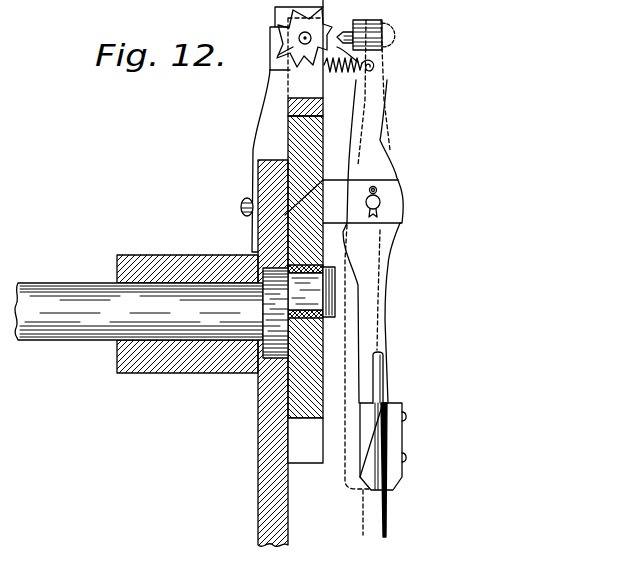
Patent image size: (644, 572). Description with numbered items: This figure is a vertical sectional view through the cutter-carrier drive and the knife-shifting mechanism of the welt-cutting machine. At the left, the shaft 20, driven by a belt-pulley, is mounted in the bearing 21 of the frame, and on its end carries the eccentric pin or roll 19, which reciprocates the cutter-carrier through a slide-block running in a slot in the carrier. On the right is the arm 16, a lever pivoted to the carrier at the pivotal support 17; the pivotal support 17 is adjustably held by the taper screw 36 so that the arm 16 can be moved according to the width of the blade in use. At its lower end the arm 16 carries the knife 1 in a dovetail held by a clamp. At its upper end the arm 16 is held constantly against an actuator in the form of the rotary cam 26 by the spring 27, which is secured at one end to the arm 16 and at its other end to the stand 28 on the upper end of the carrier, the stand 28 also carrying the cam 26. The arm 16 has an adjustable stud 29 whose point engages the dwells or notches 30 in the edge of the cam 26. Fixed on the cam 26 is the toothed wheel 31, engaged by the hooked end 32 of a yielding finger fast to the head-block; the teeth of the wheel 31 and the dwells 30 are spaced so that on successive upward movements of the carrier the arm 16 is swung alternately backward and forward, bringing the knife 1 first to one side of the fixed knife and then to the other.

The knife 1 is at (387, 523).
The arm 16 is at (385, 303).
The pivotal support 17 is at (395, 198).
The eccentric pin or roll 19 is at (267, 268).
The shaft 20 is at (183, 320).
The bearing 21 is at (123, 366).
The rotary cam 26 is at (322, 6).
The spring 27 is at (360, 79).
The stand 28 is at (318, 90).
The adjustable stud 29 is at (387, 49).
The dwells or notches 30 is at (387, 14).
The toothed wheel 31 is at (290, 49).
The hooked end 32 is at (273, 33).
The taper screw 36 is at (323, 180).